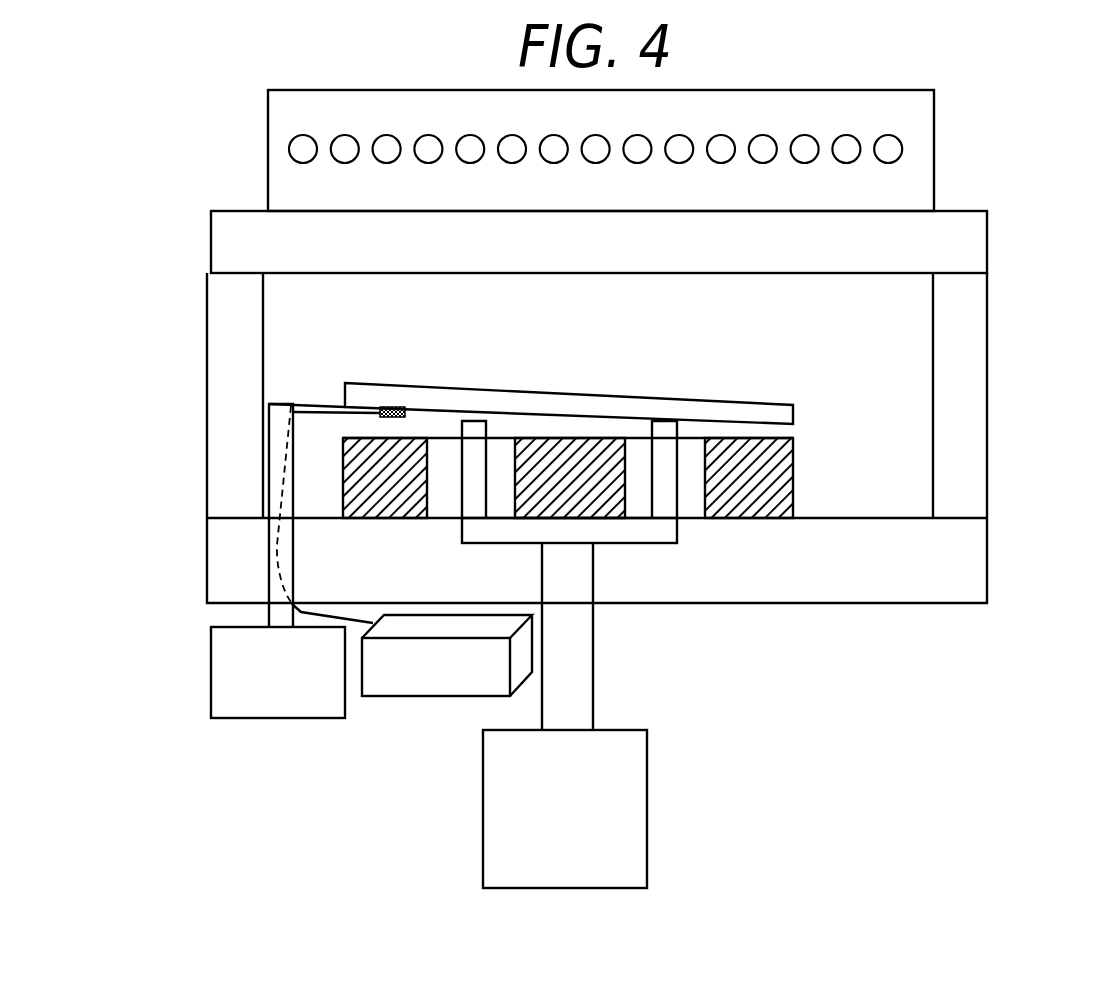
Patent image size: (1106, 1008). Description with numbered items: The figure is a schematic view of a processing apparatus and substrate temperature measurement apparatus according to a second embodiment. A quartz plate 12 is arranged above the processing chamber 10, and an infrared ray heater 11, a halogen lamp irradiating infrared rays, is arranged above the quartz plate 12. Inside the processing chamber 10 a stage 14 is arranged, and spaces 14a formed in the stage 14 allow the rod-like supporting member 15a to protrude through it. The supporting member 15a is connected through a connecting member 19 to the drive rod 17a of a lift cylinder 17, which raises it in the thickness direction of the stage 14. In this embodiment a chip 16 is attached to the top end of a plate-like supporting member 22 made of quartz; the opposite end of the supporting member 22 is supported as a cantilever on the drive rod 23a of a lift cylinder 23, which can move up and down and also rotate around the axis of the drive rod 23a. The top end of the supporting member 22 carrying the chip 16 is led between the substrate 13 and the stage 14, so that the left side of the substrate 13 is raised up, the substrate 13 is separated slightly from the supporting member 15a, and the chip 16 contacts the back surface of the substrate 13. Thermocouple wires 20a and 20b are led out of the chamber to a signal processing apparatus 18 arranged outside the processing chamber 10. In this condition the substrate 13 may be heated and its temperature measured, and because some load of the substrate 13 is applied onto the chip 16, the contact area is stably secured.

The processing chamber 10 is at (887, 357).
The infrared ray heater 11 is at (917, 181).
The quartz plate 12 is at (968, 244).
The substrate 13 is at (602, 405).
The stage 14 is at (795, 477).
The spaces 14a is at (443, 503).
The supporting member 15a is at (473, 428).
The chip 16 is at (390, 407).
The lift cylinder 17 is at (633, 823).
The drive rod 17a is at (585, 703).
The signal processing apparatus 18 is at (438, 683).
The connecting member 19 is at (645, 532).
The thermocouple wire 20a is at (325, 617).
The thermocouple wire 20b is at (284, 504).
The plate-like supporting member 22 is at (317, 404).
The lift cylinder 23 is at (237, 675).
The drive rod 23a is at (277, 459).